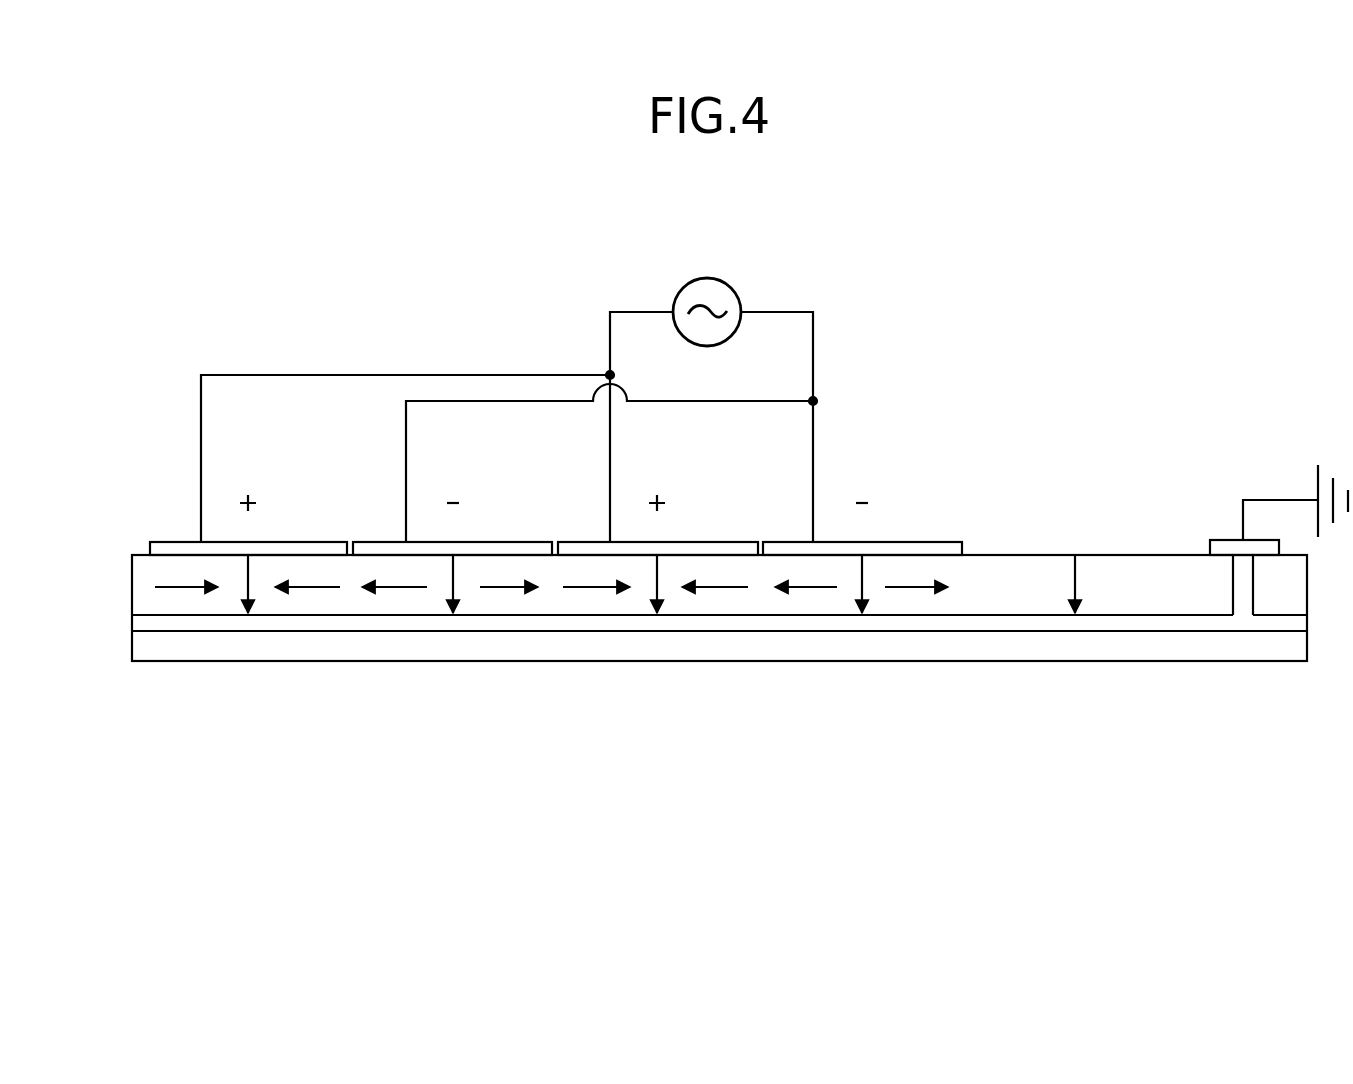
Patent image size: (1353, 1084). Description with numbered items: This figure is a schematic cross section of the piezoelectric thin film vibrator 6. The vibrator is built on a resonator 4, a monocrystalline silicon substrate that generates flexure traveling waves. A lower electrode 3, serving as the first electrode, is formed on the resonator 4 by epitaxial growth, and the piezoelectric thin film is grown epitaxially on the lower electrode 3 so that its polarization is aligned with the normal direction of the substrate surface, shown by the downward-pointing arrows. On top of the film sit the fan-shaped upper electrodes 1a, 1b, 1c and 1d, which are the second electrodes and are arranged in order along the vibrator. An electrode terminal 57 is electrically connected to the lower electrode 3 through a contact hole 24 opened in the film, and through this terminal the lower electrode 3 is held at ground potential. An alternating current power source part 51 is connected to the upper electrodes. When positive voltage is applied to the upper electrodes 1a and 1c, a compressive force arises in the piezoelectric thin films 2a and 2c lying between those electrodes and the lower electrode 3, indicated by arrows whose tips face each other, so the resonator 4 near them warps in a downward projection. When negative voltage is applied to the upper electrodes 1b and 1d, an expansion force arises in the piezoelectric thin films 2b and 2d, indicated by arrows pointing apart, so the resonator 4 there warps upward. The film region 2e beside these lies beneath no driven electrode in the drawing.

The upper electrode 1a is at (226, 545).
The upper electrode 1b is at (431, 545).
The upper electrode 1c is at (634, 545).
The upper electrode 1d is at (836, 545).
The piezoelectric thin film 2a is at (302, 572).
The piezoelectric thin film 2b is at (507, 572).
The piezoelectric thin film 2c is at (710, 572).
The piezoelectric thin film 2d is at (912, 572).
The fifth polarized region 2e is at (1152, 572).
The lower electrode 3 is at (141, 623).
The resonator 4 is at (1176, 650).
The piezoelectric thin film vibrator 6 is at (1046, 692).
The contact hole 24 is at (1251, 485).
The alternating current power source part 51 is at (708, 277).
The electrode terminal 57 is at (1225, 540).